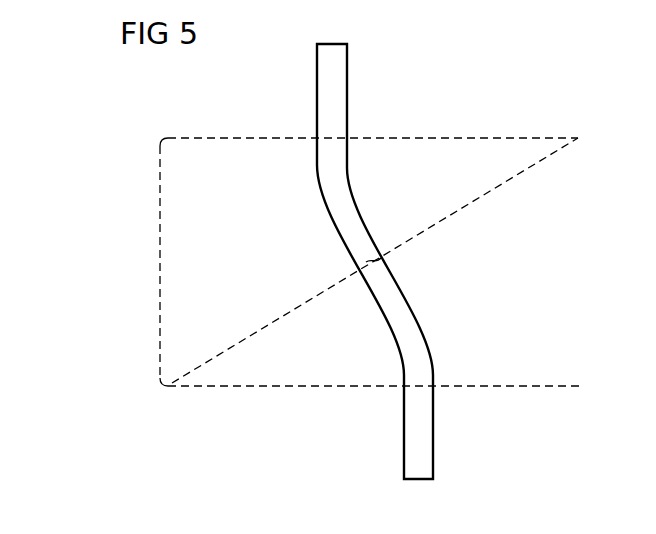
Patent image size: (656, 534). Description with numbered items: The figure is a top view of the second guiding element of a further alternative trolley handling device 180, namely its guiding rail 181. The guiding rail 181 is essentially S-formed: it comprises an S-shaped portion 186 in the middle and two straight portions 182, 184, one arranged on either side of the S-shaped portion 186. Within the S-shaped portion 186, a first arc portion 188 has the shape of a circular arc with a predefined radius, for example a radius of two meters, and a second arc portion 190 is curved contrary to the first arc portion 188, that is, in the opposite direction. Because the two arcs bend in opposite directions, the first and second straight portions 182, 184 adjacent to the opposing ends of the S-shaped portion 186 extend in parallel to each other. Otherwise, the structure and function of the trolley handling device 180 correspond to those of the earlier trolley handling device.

The trolley handling device 180 is at (487, 58).
The guiding rail 181 is at (518, 219).
The first straight portion 182 is at (343, 72).
The second straight portion 184 is at (428, 465).
The S-shaped portion 186 is at (160, 254).
The first arc portion 188 is at (350, 187).
The second arc portion 190 is at (405, 294).